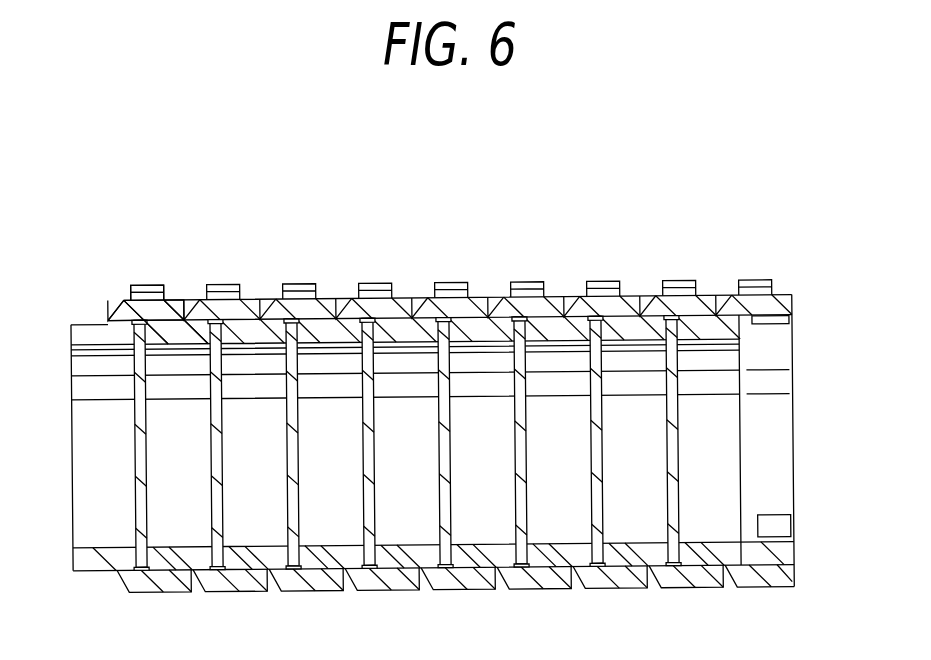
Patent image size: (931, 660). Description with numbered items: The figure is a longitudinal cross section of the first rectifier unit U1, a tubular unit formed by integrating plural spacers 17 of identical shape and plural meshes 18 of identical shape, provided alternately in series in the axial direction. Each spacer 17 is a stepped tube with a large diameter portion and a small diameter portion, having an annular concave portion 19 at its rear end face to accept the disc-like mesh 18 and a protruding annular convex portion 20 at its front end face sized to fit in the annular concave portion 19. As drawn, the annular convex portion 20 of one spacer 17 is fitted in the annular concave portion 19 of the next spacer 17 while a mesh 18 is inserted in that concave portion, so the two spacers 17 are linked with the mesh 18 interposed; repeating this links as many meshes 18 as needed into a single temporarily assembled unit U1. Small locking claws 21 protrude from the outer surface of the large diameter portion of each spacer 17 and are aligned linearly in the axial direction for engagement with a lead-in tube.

The first rectifier unit U1 is at (500, 238).
The spacer 17 is at (781, 302).
The mesh 18 is at (145, 283).
The annular concave portion 19 is at (172, 320).
The annular convex portion 20 is at (90, 321).
The locking claw 21 is at (752, 278).